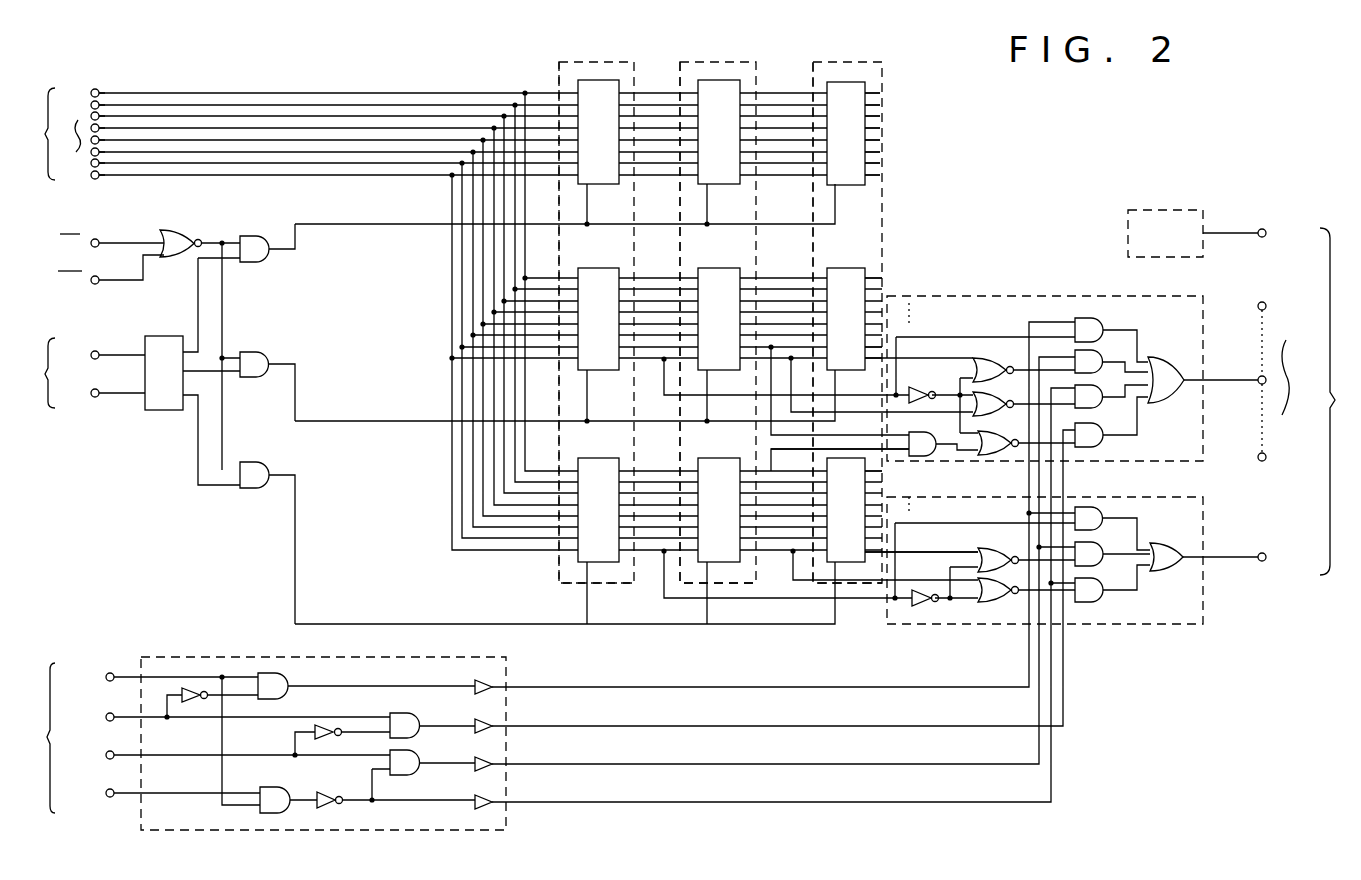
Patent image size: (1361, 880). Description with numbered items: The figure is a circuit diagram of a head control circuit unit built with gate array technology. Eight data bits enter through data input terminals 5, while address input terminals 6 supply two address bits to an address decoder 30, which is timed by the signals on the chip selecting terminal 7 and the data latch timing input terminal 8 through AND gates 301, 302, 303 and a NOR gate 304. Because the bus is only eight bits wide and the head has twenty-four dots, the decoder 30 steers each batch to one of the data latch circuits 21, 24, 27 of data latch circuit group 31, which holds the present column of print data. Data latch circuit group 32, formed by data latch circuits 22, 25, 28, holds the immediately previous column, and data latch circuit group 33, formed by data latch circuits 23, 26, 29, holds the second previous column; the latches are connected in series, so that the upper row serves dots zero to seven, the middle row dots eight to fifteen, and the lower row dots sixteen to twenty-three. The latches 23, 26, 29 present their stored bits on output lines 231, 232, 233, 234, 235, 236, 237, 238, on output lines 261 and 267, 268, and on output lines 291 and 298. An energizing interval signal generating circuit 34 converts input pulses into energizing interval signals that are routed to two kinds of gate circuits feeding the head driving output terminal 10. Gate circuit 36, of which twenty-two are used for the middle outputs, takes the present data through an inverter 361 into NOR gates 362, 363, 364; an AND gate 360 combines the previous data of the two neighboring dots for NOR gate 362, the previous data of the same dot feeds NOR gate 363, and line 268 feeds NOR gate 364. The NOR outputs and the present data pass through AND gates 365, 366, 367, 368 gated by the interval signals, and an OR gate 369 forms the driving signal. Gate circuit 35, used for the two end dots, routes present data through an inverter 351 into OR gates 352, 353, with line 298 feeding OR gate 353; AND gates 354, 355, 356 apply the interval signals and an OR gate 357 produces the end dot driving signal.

The data input terminals 5 is at (67, 133).
The address input terminals 6 is at (87, 373).
The chip selecting terminal 7 is at (52, 248).
The data latch timing input terminal 8 is at (52, 285).
The head driving output terminal 10 is at (1309, 399).
The data latch circuit 21 is at (589, 122).
The data latch circuit 22 is at (710, 122).
The data latch circuit 23 is at (837, 132).
The data latch circuit 24 is at (589, 329).
The data latch circuit 25 is at (710, 329).
The data latch circuit 26 is at (837, 329).
The data latch circuit 27 is at (589, 520).
The data latch circuit 28 is at (710, 520).
The data latch circuit 29 is at (837, 520).
The address decoder 30 is at (157, 412).
The data latch circuit group 31 is at (600, 586).
The data latch circuit group 32 is at (722, 586).
The data latch circuit group 33 is at (822, 580).
The energizing interval signal generating circuit 34 is at (500, 830).
The gate circuit G0 35 is at (1132, 209).
The gate circuit G1 36 is at (1062, 295).
The output line 231 is at (883, 93).
The output line 232 is at (883, 105).
The output line 233 is at (883, 116).
The output line 234 is at (883, 128).
The output line 235 is at (883, 140).
The output line 236 is at (883, 152).
The output line 237 is at (883, 163).
The output line 238 is at (883, 175).
The output line 261 is at (882, 272).
The output line 267 is at (893, 347).
The output line 268 is at (875, 366).
The output line 291 is at (882, 468).
The output line 298 is at (920, 549).
The AND gate 301 is at (262, 262).
The AND gate 302 is at (258, 380).
The AND gate 303 is at (258, 490).
The NOR gate 304 is at (188, 226).
The inverter 351 is at (918, 609).
The OR gate 352 is at (992, 600).
The OR gate 353 is at (1004, 546).
The AND gate 354 is at (1101, 522).
The AND gate 355 is at (1098, 553).
The AND gate 356 is at (1108, 595).
The OR gate 357 is at (1178, 540).
The AND gate 360 is at (938, 433).
The inverter 361 is at (920, 386).
The NOR gate 362 is at (1004, 440).
The NOR gate 363 is at (1010, 394).
The NOR gate 364 is at (1004, 356).
The AND gate 365 is at (1086, 326).
The AND gate 366 is at (1100, 363).
The AND gate 367 is at (1099, 406).
The AND gate 368 is at (1098, 442).
The OR gate 369 is at (1175, 362).